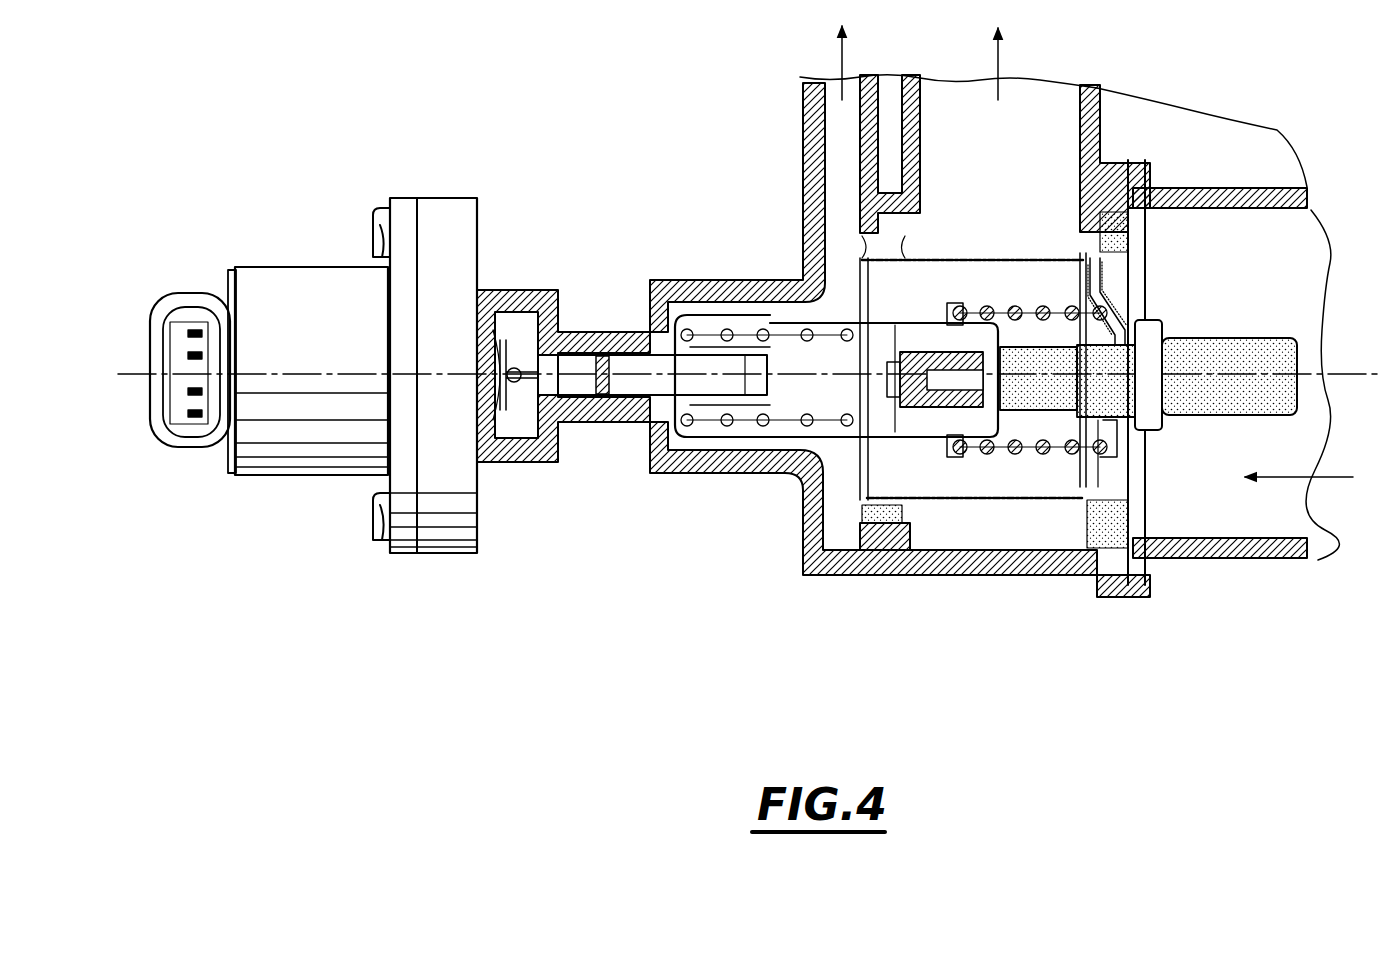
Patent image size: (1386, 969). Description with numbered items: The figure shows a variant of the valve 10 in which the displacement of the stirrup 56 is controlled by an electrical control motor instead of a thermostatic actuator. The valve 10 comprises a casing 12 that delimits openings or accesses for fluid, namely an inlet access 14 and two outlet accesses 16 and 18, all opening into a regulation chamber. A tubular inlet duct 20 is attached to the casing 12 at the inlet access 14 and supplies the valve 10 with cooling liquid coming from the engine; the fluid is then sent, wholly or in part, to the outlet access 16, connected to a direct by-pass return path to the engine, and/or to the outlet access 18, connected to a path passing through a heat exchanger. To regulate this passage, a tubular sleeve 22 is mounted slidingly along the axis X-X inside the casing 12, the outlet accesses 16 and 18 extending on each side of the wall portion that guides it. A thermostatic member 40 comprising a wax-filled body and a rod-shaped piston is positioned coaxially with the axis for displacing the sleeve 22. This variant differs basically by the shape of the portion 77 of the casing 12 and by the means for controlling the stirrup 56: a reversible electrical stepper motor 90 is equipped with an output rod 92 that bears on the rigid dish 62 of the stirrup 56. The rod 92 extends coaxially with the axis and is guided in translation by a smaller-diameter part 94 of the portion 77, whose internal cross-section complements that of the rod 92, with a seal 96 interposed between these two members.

The valve 10 is at (722, 554).
The casing 12 is at (1094, 126).
The inlet access 14 is at (1117, 472).
The outlet access 16 is at (835, 141).
The outlet access 18 is at (1029, 104).
The tubular inlet duct 20 is at (1253, 188).
The tubular sleeve 22 is at (1000, 508).
The thermostatic member 40 is at (1175, 319).
The stirrup 56 is at (805, 440).
The dish 62 is at (745, 440).
The portion of the casing 77 is at (712, 291).
The reversible electrical stepper motor 90 is at (236, 248).
The output rod 92 is at (632, 356).
The part of the portion 94 is at (633, 424).
The seal 96 is at (604, 403).